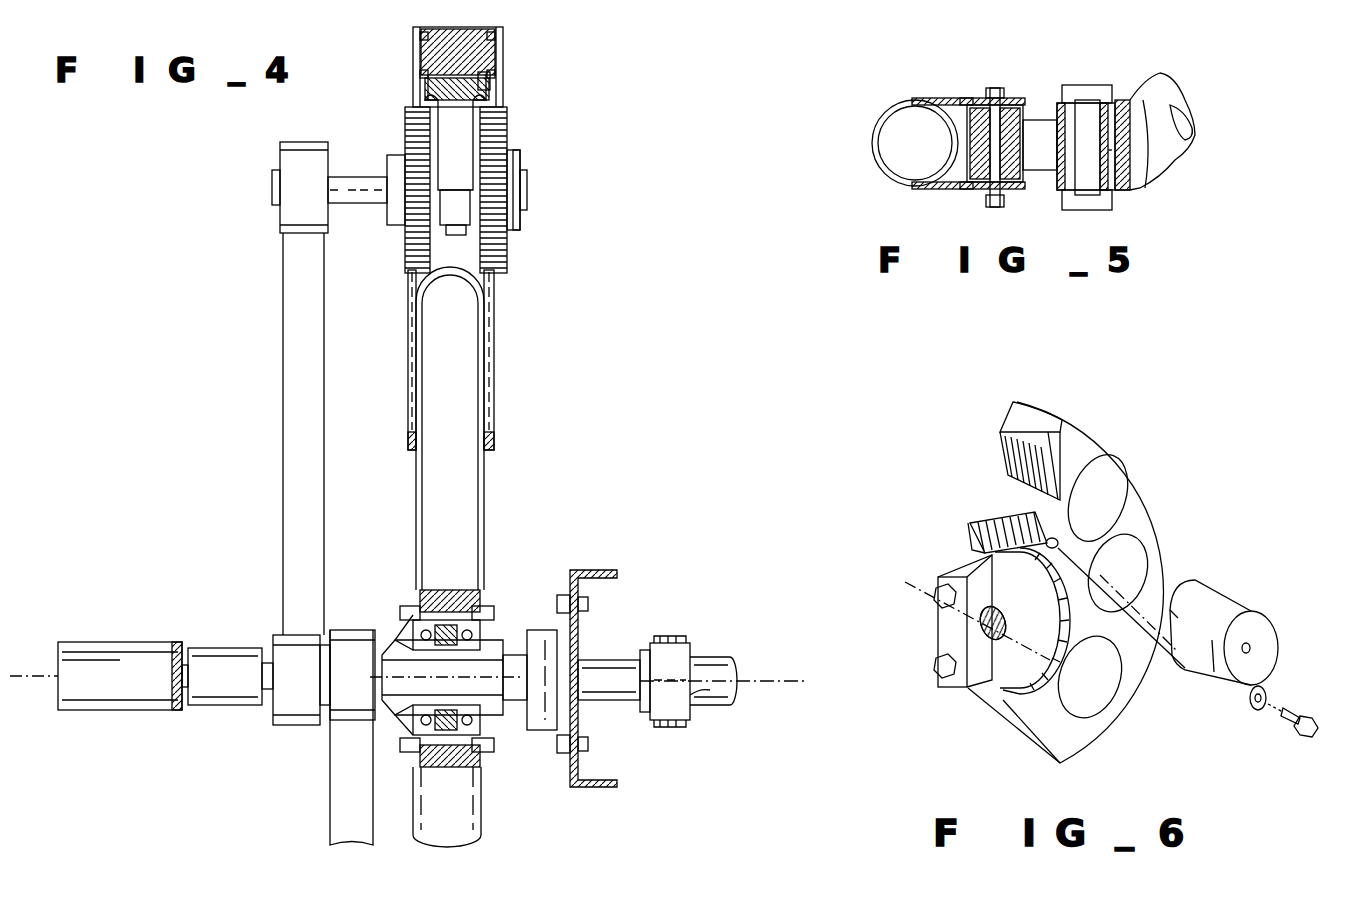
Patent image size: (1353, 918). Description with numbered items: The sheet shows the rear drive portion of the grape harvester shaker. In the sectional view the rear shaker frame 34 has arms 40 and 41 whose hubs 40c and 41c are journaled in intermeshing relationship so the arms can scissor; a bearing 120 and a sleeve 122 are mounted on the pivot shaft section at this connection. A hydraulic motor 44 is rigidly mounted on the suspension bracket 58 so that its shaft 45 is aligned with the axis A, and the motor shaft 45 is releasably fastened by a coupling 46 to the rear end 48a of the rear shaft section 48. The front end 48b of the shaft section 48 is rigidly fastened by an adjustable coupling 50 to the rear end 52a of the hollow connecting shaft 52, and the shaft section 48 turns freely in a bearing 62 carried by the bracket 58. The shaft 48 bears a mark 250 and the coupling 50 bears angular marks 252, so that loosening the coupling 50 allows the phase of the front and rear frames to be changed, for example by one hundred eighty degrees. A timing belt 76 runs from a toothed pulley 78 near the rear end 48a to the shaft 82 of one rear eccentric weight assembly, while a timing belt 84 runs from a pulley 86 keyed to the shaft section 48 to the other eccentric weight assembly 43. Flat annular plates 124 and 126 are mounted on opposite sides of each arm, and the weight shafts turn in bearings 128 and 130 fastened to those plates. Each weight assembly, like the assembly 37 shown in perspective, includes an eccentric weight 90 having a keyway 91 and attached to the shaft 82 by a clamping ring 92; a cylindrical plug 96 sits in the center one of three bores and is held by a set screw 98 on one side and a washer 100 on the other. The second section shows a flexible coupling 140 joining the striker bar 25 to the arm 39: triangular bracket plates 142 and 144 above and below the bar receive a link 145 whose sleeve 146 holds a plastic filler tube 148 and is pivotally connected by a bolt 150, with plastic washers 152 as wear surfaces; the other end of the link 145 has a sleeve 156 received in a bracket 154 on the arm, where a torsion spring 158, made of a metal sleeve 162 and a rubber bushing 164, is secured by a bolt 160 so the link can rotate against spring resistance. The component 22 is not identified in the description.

In FIG. 4, the belt drive assembly 22 is at (275, 302).
In FIG. 5, the striker bar 25 is at (870, 143).
In FIG. 4, the rear shaker frame 34 is at (508, 66).
In FIG. 6, the eccentric weight assembly 37 is at (1160, 492).
In FIG. 5, the arm 39 is at (1185, 143).
In FIG. 4, the arm 40 is at (485, 832).
In FIG. 4, the hub 40c is at (470, 770).
In FIG. 4, the arm 41 is at (488, 490).
In FIG. 4, the hub 41c is at (470, 606).
In FIG. 4, the eccentric weight assembly 43 is at (505, 41).
In FIG. 4, the hydraulic motor 44 is at (120, 645).
In FIG. 4, the motor shaft 45 is at (178, 690).
In FIG. 4, the coupling 46 is at (205, 705).
In FIG. 4, the rear shaft section 48 is at (462, 690).
In FIG. 4, the rear end of rear shaft section 48a is at (268, 660).
In FIG. 4, the front end of rear shaft section 48b is at (590, 658).
In FIG. 4, the coupling 50 is at (690, 658).
In FIG. 4, the connecting shaft 52 is at (740, 668).
In FIG. 4, the rear end of connecting shaft 52a is at (705, 708).
In FIG. 4, the suspension bracket 58 is at (592, 570).
In FIG. 4, the bearing 62 is at (545, 718).
In FIG. 4, the timing belt 76 is at (336, 812).
In FIG. 4, the toothed pulley 78 is at (330, 722).
In FIG. 4, the shaft 82 is at (357, 185).
In FIG. 6, the shaft 82 is at (982, 628).
In FIG. 4, the timing belt 84 is at (283, 409).
In FIG. 4, the pulley 86 is at (275, 718).
In FIG. 4, the eccentric weight 90 is at (462, 112).
In FIG. 6, the eccentric weight 90 is at (1075, 424).
In FIG. 6, the keyway 91 is at (1005, 620).
In FIG. 4, the clamping ring 92 is at (470, 222).
In FIG. 6, the clamping ring 92 is at (938, 624).
In FIG. 4, the cylindrical plug 96 is at (430, 58).
In FIG. 6, the cylindrical plug 96 is at (1240, 598).
In FIG. 4, the set screw 98 is at (492, 80).
In FIG. 6, the set screw 98 is at (1292, 720).
In FIG. 4, the washer 100 is at (428, 82).
In FIG. 6, the washer 100 is at (1013, 508).
In FIG. 4, the bearing 120 is at (398, 645).
In FIG. 4, the sleeve 122 is at (412, 600).
In FIG. 4, the flat annular plate 124 is at (408, 408).
In FIG. 4, the flat annular plate 126 is at (495, 413).
In FIG. 4, the bearing 128 is at (412, 220).
In FIG. 4, the bearing 130 is at (500, 210).
In FIG. 5, the flexible coupling 140 is at (1128, 98).
In FIG. 5, the triangular bracket plate 142 is at (920, 98).
In FIG. 5, the triangular bracket plate 144 is at (918, 186).
In FIG. 5, the link 145 is at (1040, 172).
In FIG. 5, the sleeve 146 is at (1015, 100).
In FIG. 5, the plastic filler tube 148 is at (990, 100).
In FIG. 5, the bolt 150 is at (995, 207).
In FIG. 5, the plastic washers 152 is at (966, 98).
In FIG. 5, the bracket 154 is at (1118, 192).
In FIG. 5, the sleeve 156 is at (1060, 103).
In FIG. 5, the torsion spring 158 is at (1100, 125).
In FIG. 5, the bolt 160 is at (1085, 92).
In FIG. 5, the metal sleeve 162 is at (1068, 205).
In FIG. 5, the rubber bushing 164 is at (1108, 165).
In FIG. 4, the mark 250 is at (608, 752).
In FIG. 4, the angular marks 252 is at (652, 660).
In FIG. 4, the axis A— A is at (778, 692).